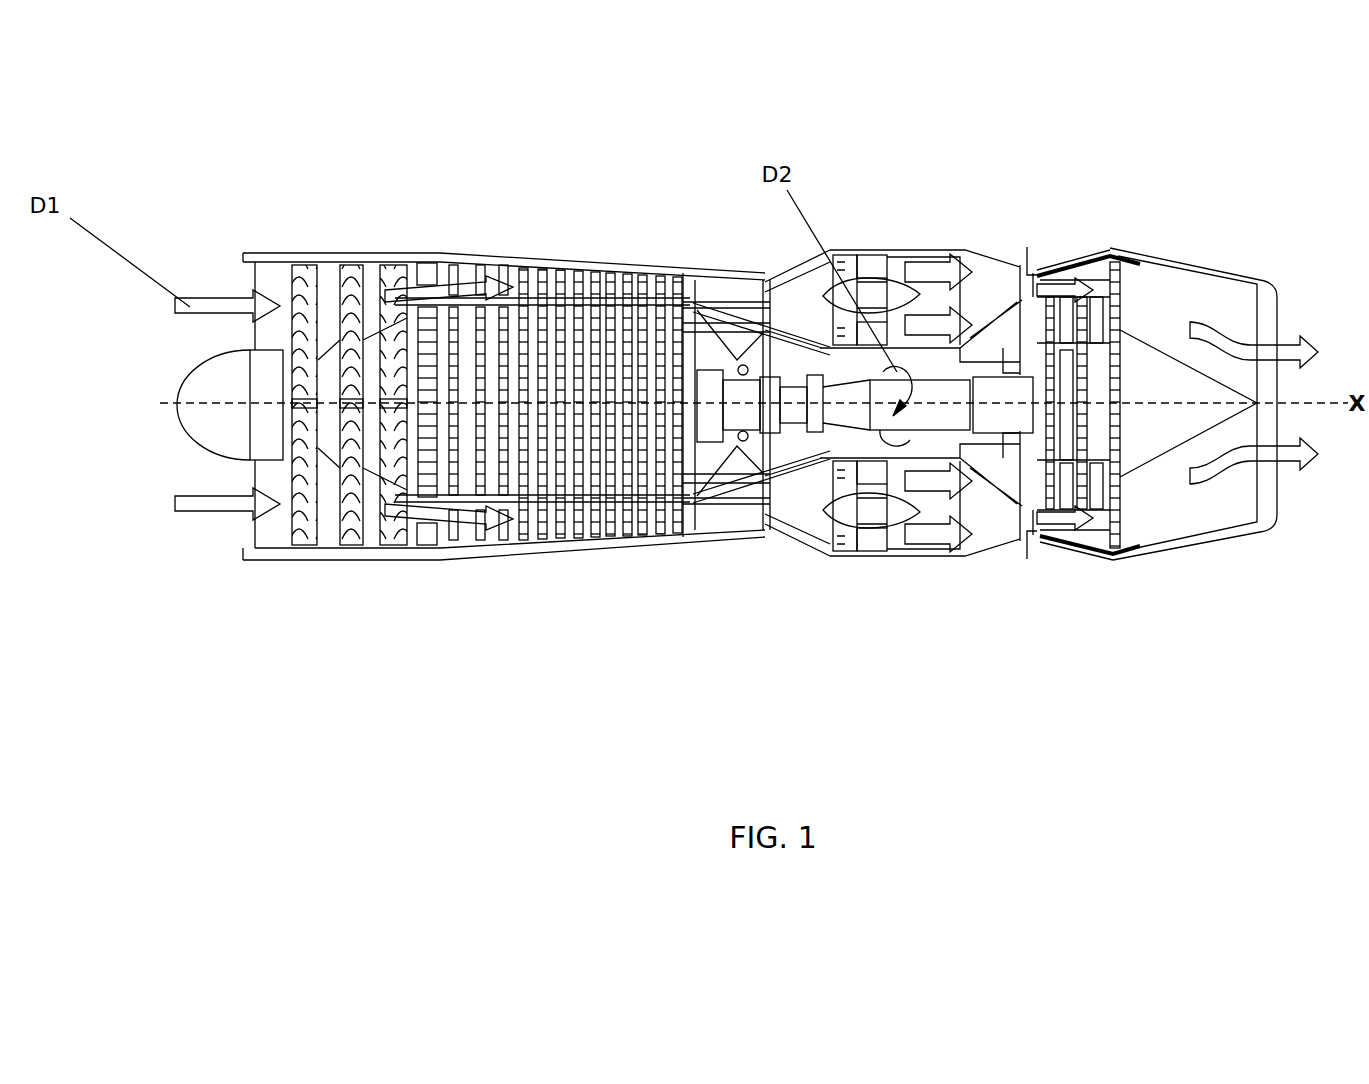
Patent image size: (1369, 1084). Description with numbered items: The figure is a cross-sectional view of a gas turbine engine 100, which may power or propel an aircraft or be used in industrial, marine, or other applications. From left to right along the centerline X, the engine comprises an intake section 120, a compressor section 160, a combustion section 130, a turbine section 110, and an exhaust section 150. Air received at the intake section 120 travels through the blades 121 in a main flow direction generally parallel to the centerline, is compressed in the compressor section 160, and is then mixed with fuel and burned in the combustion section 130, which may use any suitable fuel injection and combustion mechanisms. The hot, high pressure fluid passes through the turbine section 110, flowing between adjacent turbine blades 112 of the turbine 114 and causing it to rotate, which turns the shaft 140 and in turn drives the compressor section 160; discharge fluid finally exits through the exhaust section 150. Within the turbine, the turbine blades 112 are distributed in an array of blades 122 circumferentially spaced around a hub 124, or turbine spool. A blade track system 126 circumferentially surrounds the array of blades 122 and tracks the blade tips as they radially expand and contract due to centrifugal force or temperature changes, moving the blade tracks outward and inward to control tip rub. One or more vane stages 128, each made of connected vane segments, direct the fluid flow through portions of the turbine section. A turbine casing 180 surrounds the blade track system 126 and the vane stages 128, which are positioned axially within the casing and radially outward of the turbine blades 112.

The gas turbine engine 100 is at (803, 625).
The turbine section 110 is at (1075, 200).
The turbine blades 112 is at (1122, 376).
The turbine 114 is at (1145, 424).
The intake section 120 is at (225, 540).
The blades 121 is at (335, 268).
The array of blades 122 is at (1082, 573).
The hub 124 is at (1114, 370).
The blade track system 126 is at (1092, 256).
The vane stage 128 is at (1058, 540).
The combustion section 130 is at (978, 270).
The shaft 140 is at (945, 407).
The exhaust section 150 is at (1283, 312).
The compressor section 160 is at (547, 232).
The turbine casing 180 is at (1157, 256).